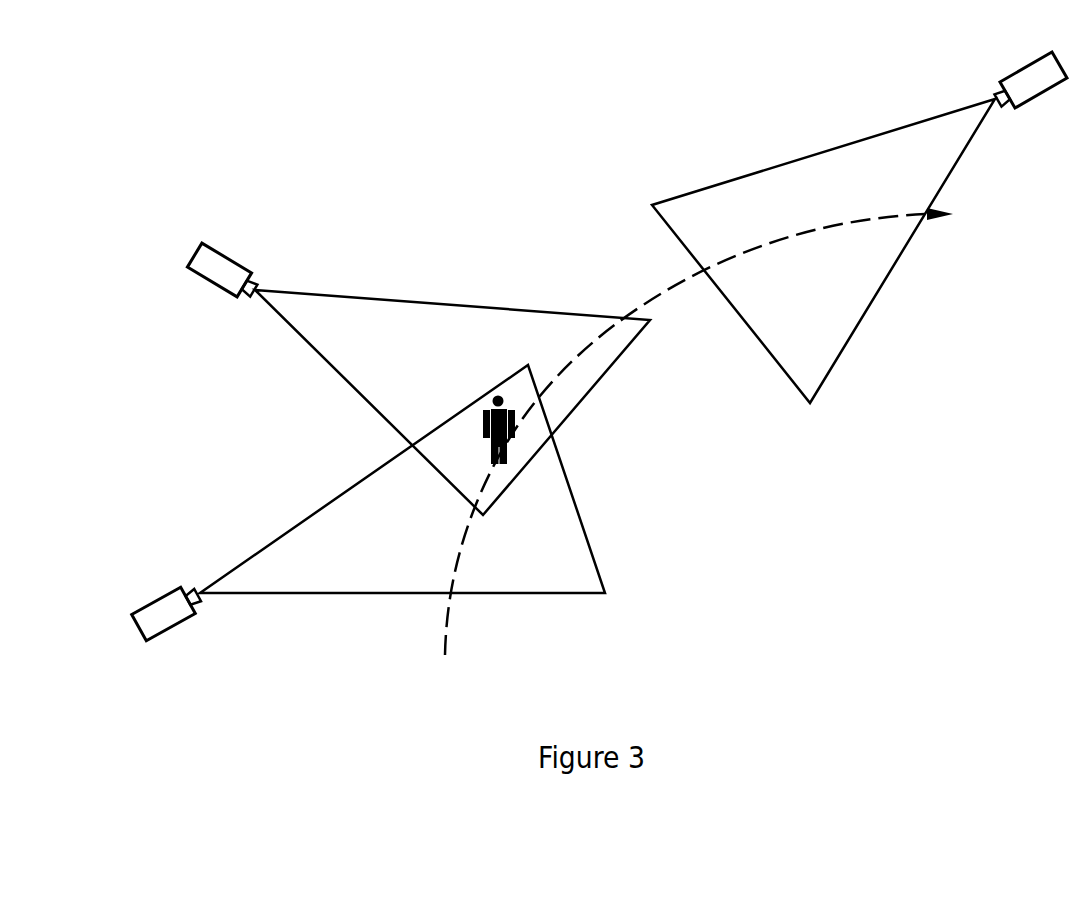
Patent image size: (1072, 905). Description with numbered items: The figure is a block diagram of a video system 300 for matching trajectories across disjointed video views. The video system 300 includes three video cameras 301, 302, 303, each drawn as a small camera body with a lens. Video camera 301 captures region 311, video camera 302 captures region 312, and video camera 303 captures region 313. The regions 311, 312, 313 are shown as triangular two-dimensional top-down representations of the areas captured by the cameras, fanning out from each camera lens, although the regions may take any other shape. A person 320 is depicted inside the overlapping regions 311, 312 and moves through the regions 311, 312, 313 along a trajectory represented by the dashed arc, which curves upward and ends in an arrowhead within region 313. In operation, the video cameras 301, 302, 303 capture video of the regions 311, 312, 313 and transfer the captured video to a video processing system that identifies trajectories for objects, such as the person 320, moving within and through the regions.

The video system 300 is at (252, 112).
The video camera 301 is at (178, 627).
The video camera 302 is at (225, 253).
The video camera 303 is at (1028, 62).
The region 311 is at (328, 500).
The region 312 is at (488, 305).
The region 313 is at (865, 140).
The person 320 is at (498, 393).